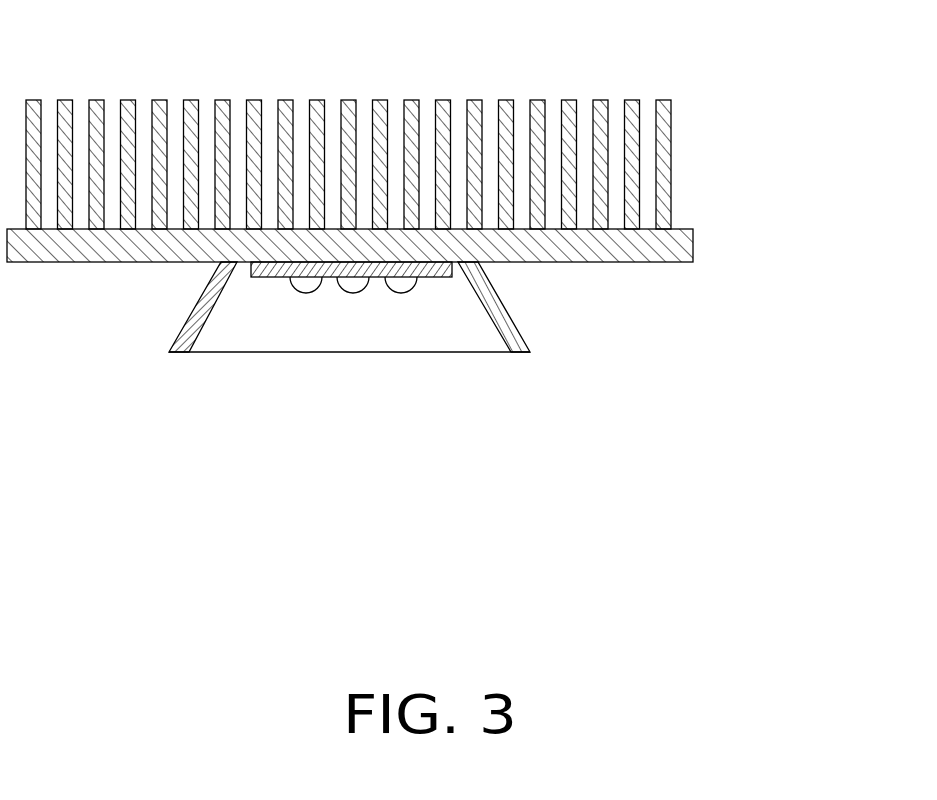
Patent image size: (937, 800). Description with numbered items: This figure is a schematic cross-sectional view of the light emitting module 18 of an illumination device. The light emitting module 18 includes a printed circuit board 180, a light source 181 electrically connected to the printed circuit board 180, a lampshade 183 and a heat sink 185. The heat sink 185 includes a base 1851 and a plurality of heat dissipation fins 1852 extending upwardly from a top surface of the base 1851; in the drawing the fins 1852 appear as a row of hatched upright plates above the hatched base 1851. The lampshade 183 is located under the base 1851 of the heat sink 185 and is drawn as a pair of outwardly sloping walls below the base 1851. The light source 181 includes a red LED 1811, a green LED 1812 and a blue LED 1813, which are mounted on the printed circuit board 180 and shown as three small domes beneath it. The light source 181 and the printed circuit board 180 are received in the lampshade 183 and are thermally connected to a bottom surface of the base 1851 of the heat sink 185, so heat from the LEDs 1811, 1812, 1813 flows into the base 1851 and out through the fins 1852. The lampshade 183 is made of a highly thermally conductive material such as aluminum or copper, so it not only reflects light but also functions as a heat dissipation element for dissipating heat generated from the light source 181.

The light emitting module 18 is at (344, 51).
The heat sink 185 is at (797, 142).
The heat dissipation fins 1852 is at (662, 162).
The base 1851 is at (680, 248).
The printed circuit board 180 is at (452, 275).
The light source 181 is at (472, 428).
The red LED 1811 is at (297, 289).
The green LED 1812 is at (353, 289).
The blue LED 1813 is at (401, 289).
The lampshade 183 is at (192, 327).